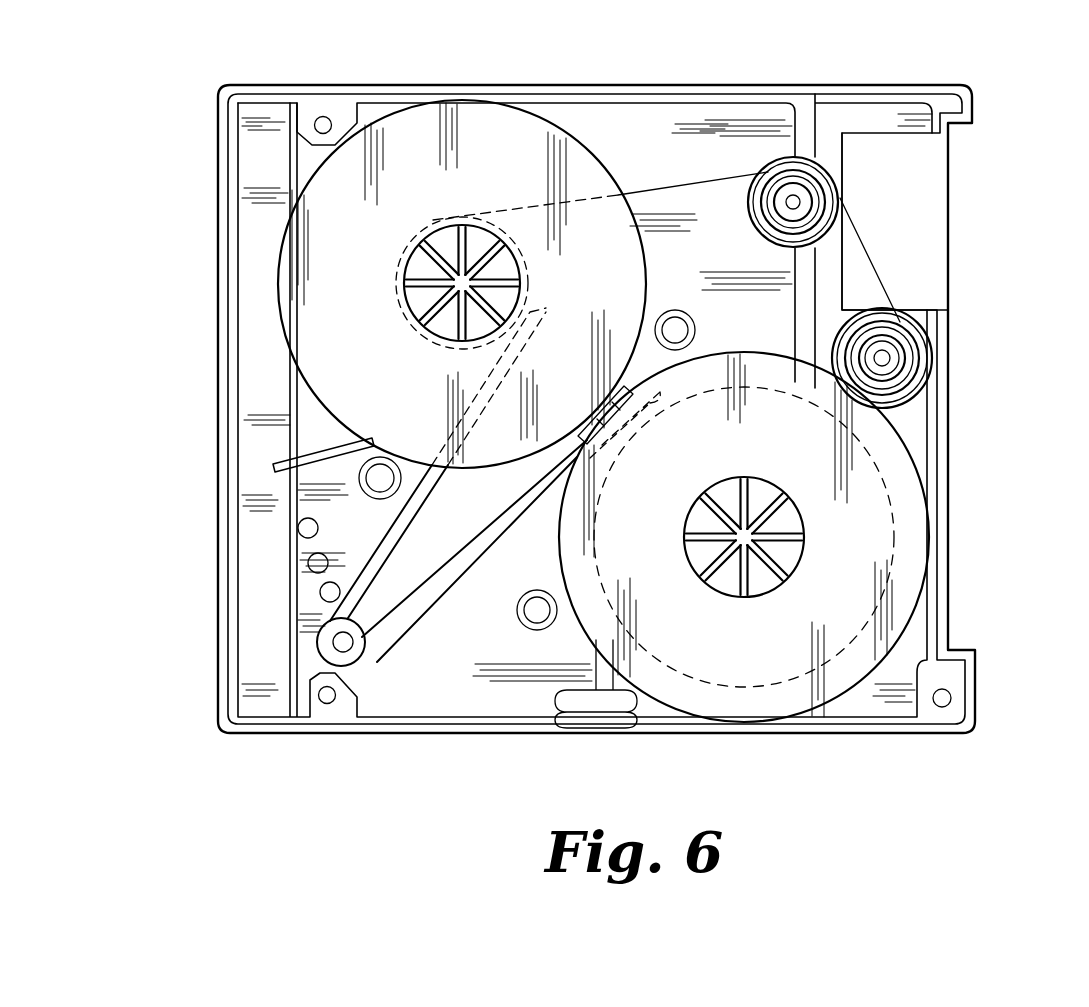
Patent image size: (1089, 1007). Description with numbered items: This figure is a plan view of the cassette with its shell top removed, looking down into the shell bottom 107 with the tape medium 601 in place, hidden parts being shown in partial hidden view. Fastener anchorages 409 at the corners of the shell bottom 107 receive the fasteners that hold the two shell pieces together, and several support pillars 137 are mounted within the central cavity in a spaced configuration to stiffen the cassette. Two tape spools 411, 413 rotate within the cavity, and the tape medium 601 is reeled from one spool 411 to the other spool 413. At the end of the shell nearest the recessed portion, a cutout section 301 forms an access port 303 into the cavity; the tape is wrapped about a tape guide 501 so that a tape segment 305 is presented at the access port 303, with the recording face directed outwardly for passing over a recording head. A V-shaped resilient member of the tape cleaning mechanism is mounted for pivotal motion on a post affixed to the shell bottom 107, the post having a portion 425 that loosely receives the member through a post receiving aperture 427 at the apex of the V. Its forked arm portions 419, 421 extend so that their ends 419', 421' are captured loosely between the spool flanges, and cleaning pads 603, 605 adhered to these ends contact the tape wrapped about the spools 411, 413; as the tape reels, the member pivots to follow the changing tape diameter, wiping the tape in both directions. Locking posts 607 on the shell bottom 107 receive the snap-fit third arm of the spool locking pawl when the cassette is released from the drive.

The shell bottom 107 is at (666, 86).
The fastener anchorages 409 is at (325, 116).
The tape spool 411 is at (482, 100).
The tape spool 413 is at (912, 548).
The tape medium 601 is at (688, 182).
The tape guide 501 is at (808, 208).
The access port 303 is at (897, 153).
The tape segment 305 is at (872, 262).
The cutout section 301 is at (1022, 133).
The support pillars 137 is at (372, 475).
The forked arm portion 419 is at (386, 543).
The arm end 419' is at (531, 360).
The cleaning pad 603 is at (525, 312).
The forked arm portion 421 is at (474, 551).
The arm end 421' is at (658, 425).
The post portion 425 is at (418, 549).
The post receiving aperture 427 is at (364, 650).
The cleaning pad 605 is at (627, 447).
The locking posts 607 is at (320, 593).